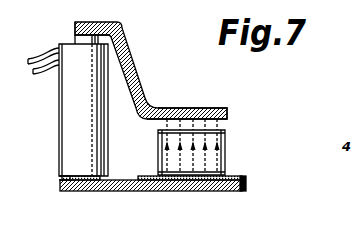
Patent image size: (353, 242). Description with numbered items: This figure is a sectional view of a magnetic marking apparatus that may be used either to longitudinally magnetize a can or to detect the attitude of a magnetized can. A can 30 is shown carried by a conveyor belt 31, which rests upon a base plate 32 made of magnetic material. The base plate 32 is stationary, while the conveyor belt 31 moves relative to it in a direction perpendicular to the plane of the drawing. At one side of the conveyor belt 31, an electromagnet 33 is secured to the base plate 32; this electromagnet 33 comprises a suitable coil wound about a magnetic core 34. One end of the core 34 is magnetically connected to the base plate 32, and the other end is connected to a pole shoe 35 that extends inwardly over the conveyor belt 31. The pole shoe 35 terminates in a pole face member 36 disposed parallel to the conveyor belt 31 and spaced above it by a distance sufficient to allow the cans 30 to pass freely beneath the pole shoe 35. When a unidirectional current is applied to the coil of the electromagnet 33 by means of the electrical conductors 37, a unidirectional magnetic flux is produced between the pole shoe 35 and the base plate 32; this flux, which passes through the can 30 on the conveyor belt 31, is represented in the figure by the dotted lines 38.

The can 30 is at (225, 153).
The conveyor belt 31 is at (243, 179).
The base plate 32 is at (243, 190).
The electromagnet 33 is at (59, 120).
The magnetic core 34 is at (75, 38).
The pole shoe 35 is at (134, 58).
The pole face member 36 is at (197, 108).
The electrical conductors 37 is at (48, 55).
The dotted lines 38 is at (217, 126).